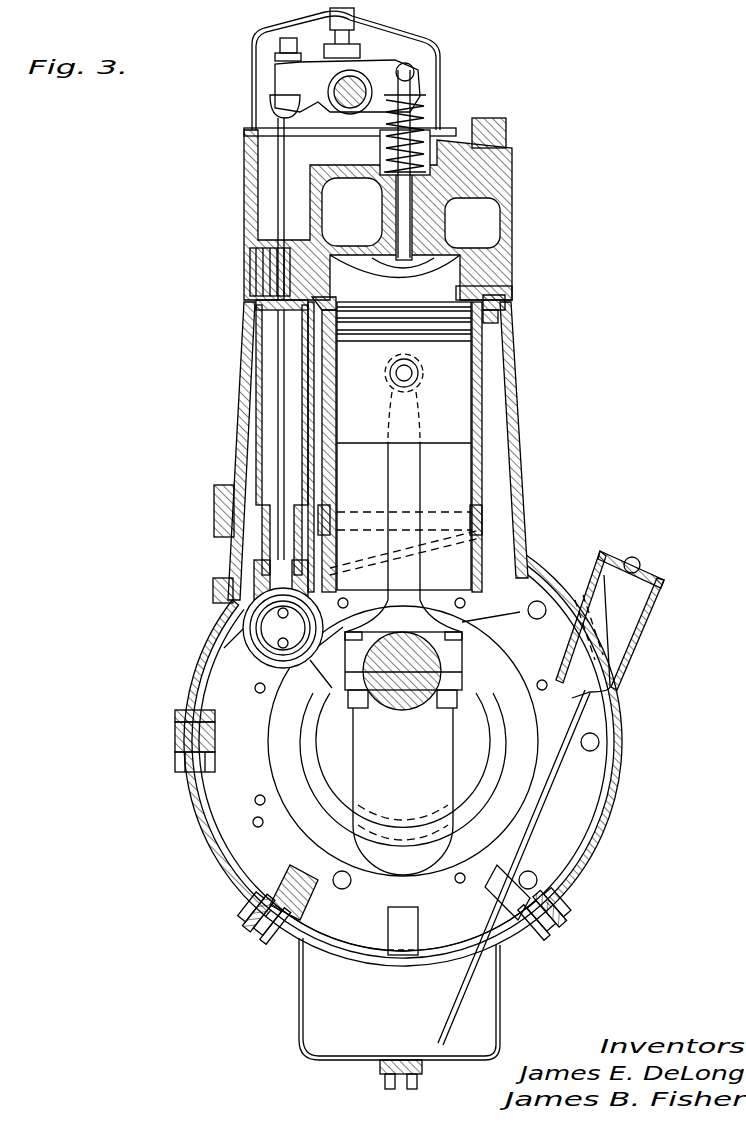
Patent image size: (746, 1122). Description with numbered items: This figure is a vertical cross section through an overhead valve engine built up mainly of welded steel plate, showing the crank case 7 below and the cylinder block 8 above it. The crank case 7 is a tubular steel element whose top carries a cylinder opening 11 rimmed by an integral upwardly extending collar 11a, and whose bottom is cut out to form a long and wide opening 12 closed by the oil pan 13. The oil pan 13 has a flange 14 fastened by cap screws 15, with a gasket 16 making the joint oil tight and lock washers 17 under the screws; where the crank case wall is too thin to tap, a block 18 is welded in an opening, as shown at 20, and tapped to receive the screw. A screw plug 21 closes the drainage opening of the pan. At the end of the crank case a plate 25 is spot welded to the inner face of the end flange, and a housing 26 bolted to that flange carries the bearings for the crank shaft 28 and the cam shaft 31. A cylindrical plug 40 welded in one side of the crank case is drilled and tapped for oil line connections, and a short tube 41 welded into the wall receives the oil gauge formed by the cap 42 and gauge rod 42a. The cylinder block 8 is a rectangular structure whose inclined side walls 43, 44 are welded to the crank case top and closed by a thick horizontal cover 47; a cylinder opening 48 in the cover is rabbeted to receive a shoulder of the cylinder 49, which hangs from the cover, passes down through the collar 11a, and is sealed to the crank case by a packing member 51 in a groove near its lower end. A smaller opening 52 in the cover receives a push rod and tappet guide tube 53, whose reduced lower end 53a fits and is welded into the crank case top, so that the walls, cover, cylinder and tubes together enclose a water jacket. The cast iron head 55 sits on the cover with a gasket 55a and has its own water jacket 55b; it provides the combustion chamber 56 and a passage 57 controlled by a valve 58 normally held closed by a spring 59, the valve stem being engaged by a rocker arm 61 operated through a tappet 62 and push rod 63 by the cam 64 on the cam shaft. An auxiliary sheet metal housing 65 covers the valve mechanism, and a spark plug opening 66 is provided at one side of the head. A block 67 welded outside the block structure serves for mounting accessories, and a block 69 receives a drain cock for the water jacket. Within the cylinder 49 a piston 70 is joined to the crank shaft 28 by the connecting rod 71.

The crank case 7 is at (183, 688).
The cylinder block 8 is at (377, 436).
The cylinder openings 11 is at (466, 540).
The collars 11a is at (322, 512).
The opening 12 is at (332, 950).
The oil pan 13 is at (299, 995).
The flange 14 is at (245, 912).
The cap screws 15 is at (260, 937).
The gasket 16 is at (250, 905).
The lock washers 17 is at (524, 940).
The block 18 is at (290, 872).
The weld 20 is at (385, 915).
The screw plug 21 is at (380, 1070).
The plate 25 is at (518, 580).
The housing 26 is at (494, 668).
The crank shaft 28 is at (355, 762).
The cam shaft 31 is at (275, 626).
The cylindrical plug 40 is at (176, 741).
The short tube 41 is at (625, 660).
The cap 42 is at (642, 567).
The gauge rod 42a is at (598, 758).
The side wall 43 is at (520, 462).
The side wall 44 is at (243, 408).
The cover 47 is at (352, 304).
The cylinder openings 48 is at (499, 320).
The cylinders 49 is at (478, 418).
The packing member 51 is at (486, 515).
The openings 52 is at (258, 308).
The push rod and tappet guide tubes 53 is at (258, 382).
The reduced lower end 53a is at (255, 540).
The head 55 is at (512, 182).
The gasket 55a is at (512, 290).
The water jacket 55b is at (485, 228).
The combustion chamber 56 is at (395, 275).
The passage 57 is at (505, 232).
The valve 58 is at (414, 246).
The valve spring 59 is at (428, 110).
The rocker arm 61 is at (385, 62).
The tappet 62 is at (262, 520).
The push rod 63 is at (280, 340).
The cam 64 is at (262, 612).
The auxiliary sheet metal housing 65 is at (432, 58).
The spark plug opening 66 is at (250, 270).
The block 67 is at (216, 485).
The block 69 is at (214, 585).
The piston 70 is at (455, 384).
The connecting rod 71 is at (418, 482).